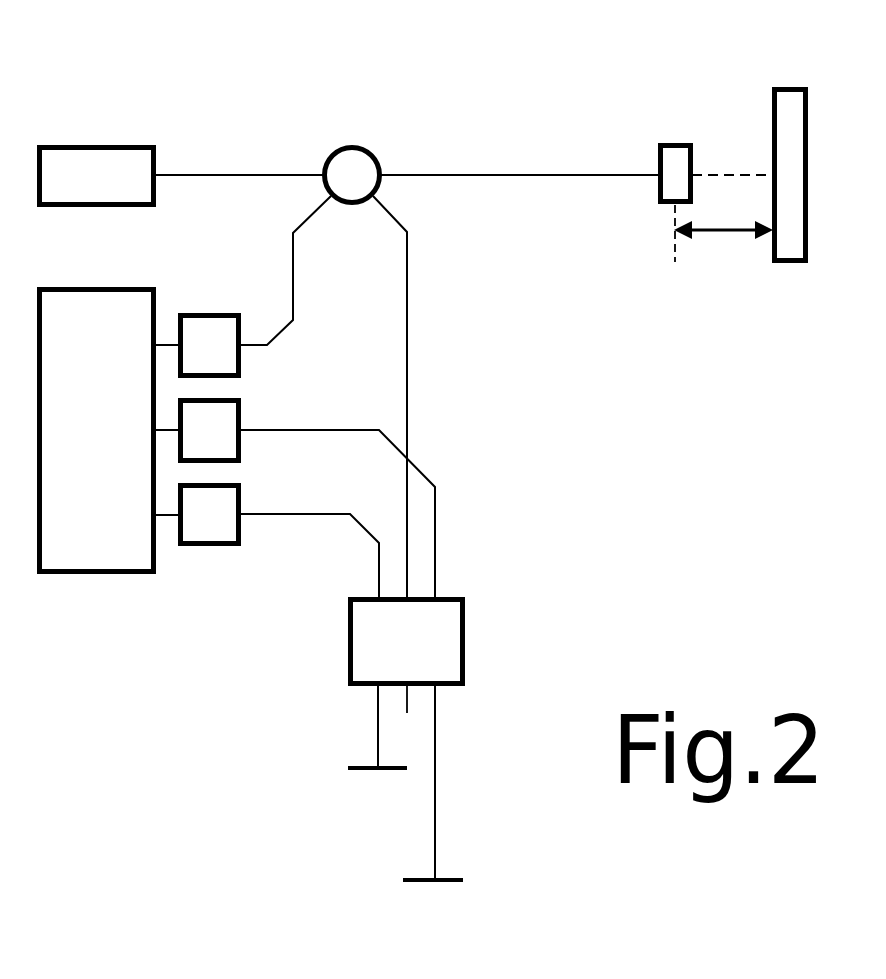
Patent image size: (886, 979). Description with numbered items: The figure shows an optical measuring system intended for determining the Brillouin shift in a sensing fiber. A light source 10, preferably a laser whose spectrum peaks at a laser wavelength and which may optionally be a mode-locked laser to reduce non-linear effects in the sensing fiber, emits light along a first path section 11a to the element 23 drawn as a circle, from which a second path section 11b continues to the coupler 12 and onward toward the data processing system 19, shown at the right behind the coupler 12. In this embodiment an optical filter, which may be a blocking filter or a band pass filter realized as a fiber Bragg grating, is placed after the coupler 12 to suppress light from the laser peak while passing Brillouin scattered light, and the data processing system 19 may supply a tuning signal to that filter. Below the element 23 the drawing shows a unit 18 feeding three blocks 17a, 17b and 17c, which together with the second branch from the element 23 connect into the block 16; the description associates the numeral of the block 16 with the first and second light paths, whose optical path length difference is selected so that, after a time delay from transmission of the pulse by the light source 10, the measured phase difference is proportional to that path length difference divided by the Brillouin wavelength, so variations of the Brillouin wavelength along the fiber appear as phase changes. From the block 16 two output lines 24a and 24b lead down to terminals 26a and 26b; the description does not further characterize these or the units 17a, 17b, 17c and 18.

The light source 10 is at (100, 146).
The first optical path section 11a is at (212, 175).
The second optical path section 11b is at (467, 175).
The beam splitter 23 is at (354, 147).
The coupler 12 is at (665, 144).
The data processing system 19 is at (782, 88).
The control unit 18 is at (98, 574).
The first detector 17a is at (241, 365).
The second detector 17b is at (241, 452).
The third detector 17c is at (241, 537).
The light path 16 is at (466, 621).
The first output line 24a is at (378, 745).
The second output line 24b is at (437, 768).
The first output terminal 26a is at (350, 771).
The second output terminal 26b is at (406, 883).